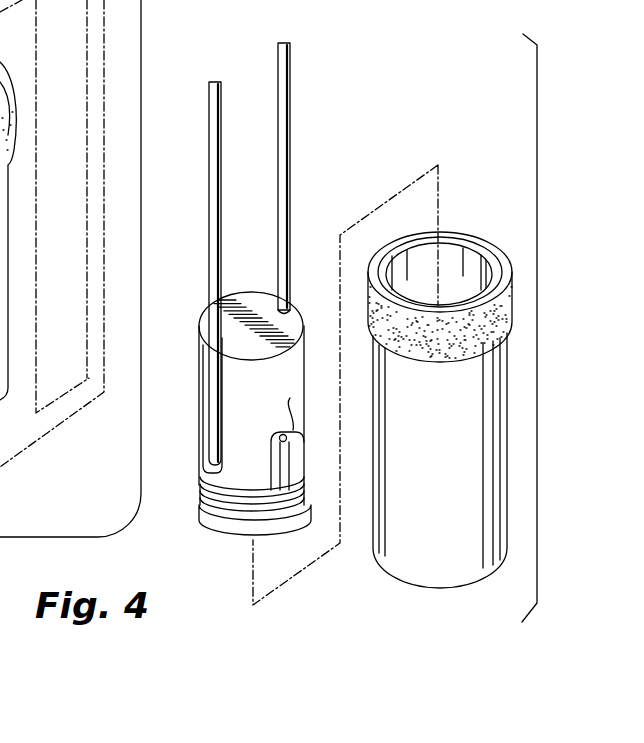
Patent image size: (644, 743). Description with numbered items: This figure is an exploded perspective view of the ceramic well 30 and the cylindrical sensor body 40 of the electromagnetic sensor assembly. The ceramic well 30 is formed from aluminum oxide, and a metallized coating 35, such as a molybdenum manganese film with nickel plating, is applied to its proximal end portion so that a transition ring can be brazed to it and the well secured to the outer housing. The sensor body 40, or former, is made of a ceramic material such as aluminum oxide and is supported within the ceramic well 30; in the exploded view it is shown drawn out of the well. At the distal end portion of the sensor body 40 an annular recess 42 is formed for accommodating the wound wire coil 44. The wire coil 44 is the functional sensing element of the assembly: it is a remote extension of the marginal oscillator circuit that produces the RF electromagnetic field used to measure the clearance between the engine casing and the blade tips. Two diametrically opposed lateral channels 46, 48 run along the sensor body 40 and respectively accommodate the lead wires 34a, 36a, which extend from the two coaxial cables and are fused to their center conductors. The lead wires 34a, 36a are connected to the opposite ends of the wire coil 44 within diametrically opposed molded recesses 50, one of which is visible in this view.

The ceramic well 30 is at (392, 556).
The metallized coating 35 is at (418, 348).
The lead wire 34a is at (284, 73).
The lead wire 36a is at (211, 119).
The sensor body 40 is at (246, 300).
The annular recess 42 is at (230, 525).
The wire coil 44 is at (200, 505).
The lateral channel 46 is at (289, 308).
The lateral channel 48 is at (208, 372).
The molded recess 50 is at (290, 398).